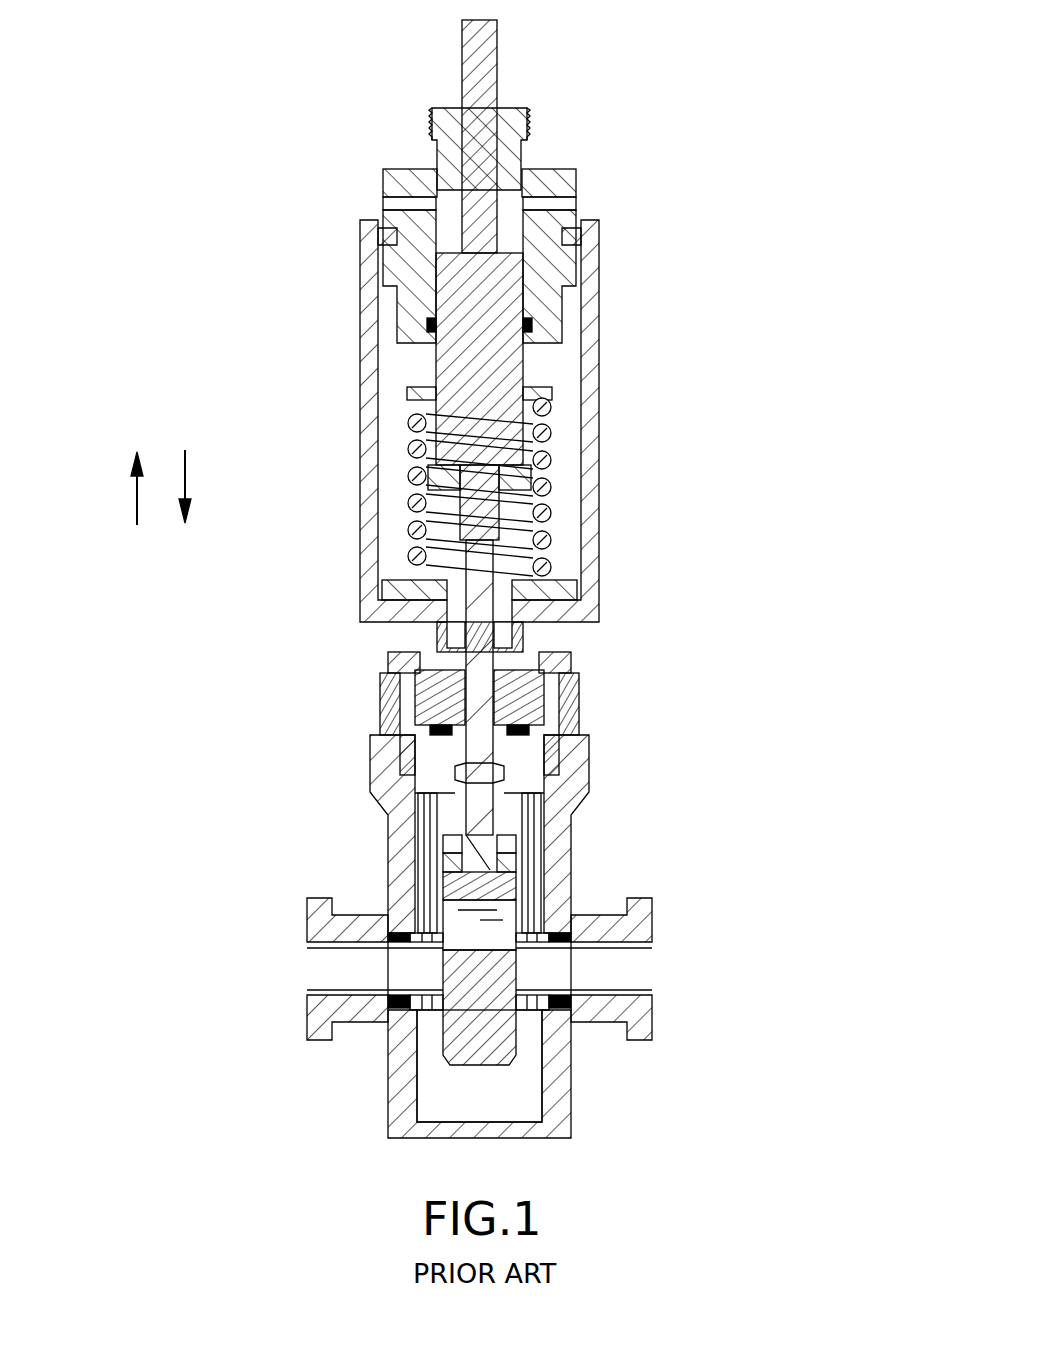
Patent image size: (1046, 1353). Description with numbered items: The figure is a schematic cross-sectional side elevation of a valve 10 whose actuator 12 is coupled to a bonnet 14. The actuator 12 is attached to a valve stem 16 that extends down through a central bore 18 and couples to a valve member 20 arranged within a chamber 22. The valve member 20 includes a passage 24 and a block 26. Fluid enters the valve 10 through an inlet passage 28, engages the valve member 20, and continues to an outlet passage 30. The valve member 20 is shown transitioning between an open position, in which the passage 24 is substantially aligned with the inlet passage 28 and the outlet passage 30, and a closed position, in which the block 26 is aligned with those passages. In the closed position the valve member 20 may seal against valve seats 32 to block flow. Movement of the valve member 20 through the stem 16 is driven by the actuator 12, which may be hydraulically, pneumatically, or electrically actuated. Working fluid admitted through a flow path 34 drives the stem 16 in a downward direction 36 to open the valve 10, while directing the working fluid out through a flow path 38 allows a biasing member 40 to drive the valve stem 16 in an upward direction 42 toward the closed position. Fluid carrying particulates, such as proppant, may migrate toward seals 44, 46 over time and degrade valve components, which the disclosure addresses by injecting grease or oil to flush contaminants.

The valve 10 is at (314, 794).
The actuator 12 is at (293, 305).
The bonnet 14 is at (593, 700).
The valve stem 16 is at (483, 648).
The central bore 18 is at (515, 770).
The valve member 20 is at (440, 1040).
The chamber 22 is at (505, 1087).
The passage 24 is at (490, 905).
The block 26 is at (518, 1040).
The inlet passage 28 is at (318, 990).
The outlet passage 30 is at (652, 988).
The valve seats 32 is at (418, 935).
The flow path 34 is at (383, 203).
The downward direction 36 is at (185, 478).
The flow path 38 is at (576, 203).
The biasing member 40 is at (551, 458).
The upward direction 42 is at (135, 492).
The seal 44 is at (465, 690).
The seal 46 is at (530, 733).